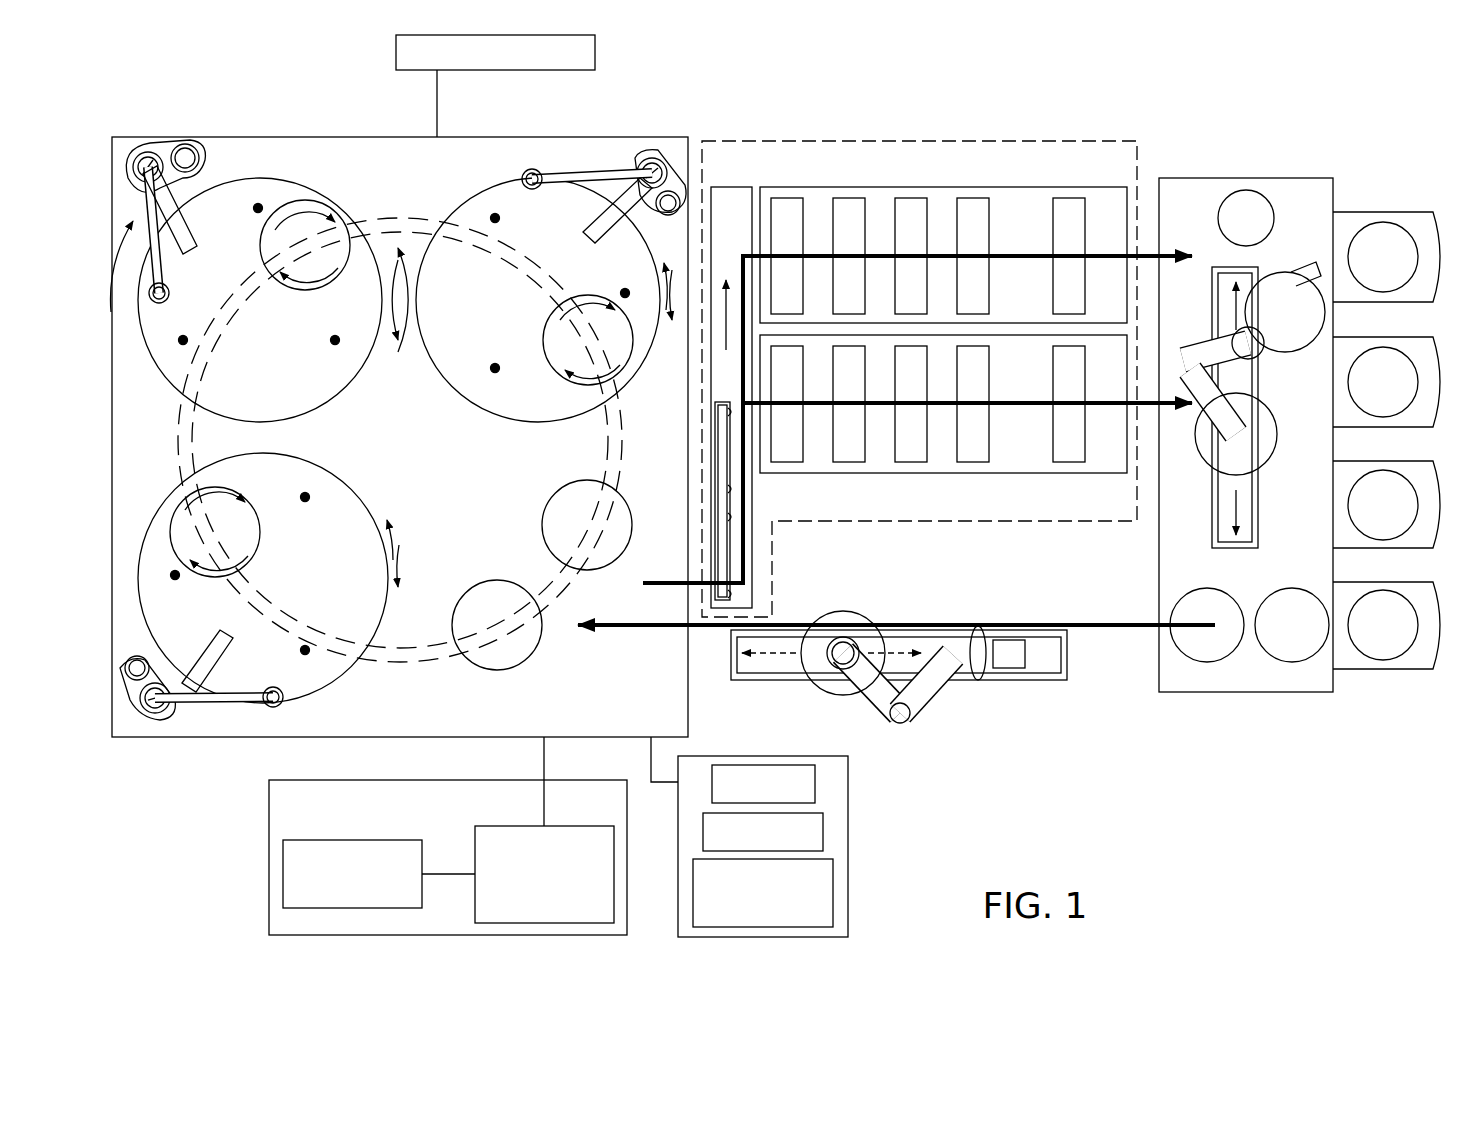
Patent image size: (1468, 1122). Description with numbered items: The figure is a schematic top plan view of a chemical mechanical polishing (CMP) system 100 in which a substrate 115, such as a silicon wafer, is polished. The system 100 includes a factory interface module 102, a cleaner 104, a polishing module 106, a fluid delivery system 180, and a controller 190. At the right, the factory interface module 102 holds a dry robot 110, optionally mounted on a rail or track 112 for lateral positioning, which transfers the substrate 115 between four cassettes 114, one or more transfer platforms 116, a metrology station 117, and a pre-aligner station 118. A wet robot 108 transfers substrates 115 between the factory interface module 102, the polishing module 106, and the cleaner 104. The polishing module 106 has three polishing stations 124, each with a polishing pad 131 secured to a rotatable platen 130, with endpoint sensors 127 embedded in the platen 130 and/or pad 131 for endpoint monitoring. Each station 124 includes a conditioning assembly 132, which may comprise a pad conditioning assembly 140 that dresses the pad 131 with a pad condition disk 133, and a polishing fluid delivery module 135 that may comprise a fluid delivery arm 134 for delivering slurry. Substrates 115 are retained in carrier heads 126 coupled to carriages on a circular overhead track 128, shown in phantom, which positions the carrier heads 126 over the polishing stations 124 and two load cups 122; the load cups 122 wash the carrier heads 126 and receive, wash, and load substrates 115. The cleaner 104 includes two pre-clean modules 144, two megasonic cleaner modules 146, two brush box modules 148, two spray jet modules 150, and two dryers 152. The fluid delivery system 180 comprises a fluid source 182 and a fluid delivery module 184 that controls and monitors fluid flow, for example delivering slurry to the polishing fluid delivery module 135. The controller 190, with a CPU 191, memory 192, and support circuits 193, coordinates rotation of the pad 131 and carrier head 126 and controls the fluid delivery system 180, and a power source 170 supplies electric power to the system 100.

The chemical mechanical polishing (CMP) system 100 is at (770, 75).
The factory interface module 102 is at (1205, 170).
The cleaner 104 is at (1015, 130).
The polishing module 106 is at (385, 132).
The wet robot 108 is at (825, 690).
The dry robot 110 is at (1272, 440).
The rail or track 112 is at (1265, 522).
The cassettes 114 is at (1398, 212).
The substrate 115 is at (1305, 330).
The transfer platforms 116 is at (1217, 660).
The metrology stations 117 is at (1285, 660).
The pre-aligner stations 118 is at (1245, 190).
The load cup 122 is at (632, 530).
The polishing stations 124 is at (215, 160).
The carrier head 126 is at (292, 175).
The endpoint sensors 127 is at (258, 205).
The overhead track 128 is at (420, 652).
The platen 130 is at (147, 360).
The polishing pad 131 is at (458, 150).
The conditioning assembly 132 is at (104, 168).
The pad condition disk 133 is at (168, 290).
The fluid delivery arm 134 is at (275, 250).
The polishing fluid delivery module 135 is at (165, 300).
The pad conditioning assembly 140 is at (165, 735).
The pre-clean modules 144 is at (787, 198).
The megasonic cleaner modules 146 is at (850, 198).
The brush box modules 148 is at (912, 198).
The spray jet modules 150 is at (974, 198).
The dryers 152 is at (1070, 198).
The power source 170 is at (600, 47).
The fluid delivery system 180 is at (269, 897).
The fluid source 182 is at (352, 840).
The fluid delivery module 184 is at (475, 830).
The controller 190 is at (850, 918).
The CPU 191 is at (815, 780).
The memory 192 is at (823, 832).
The support circuits 193 is at (833, 885).